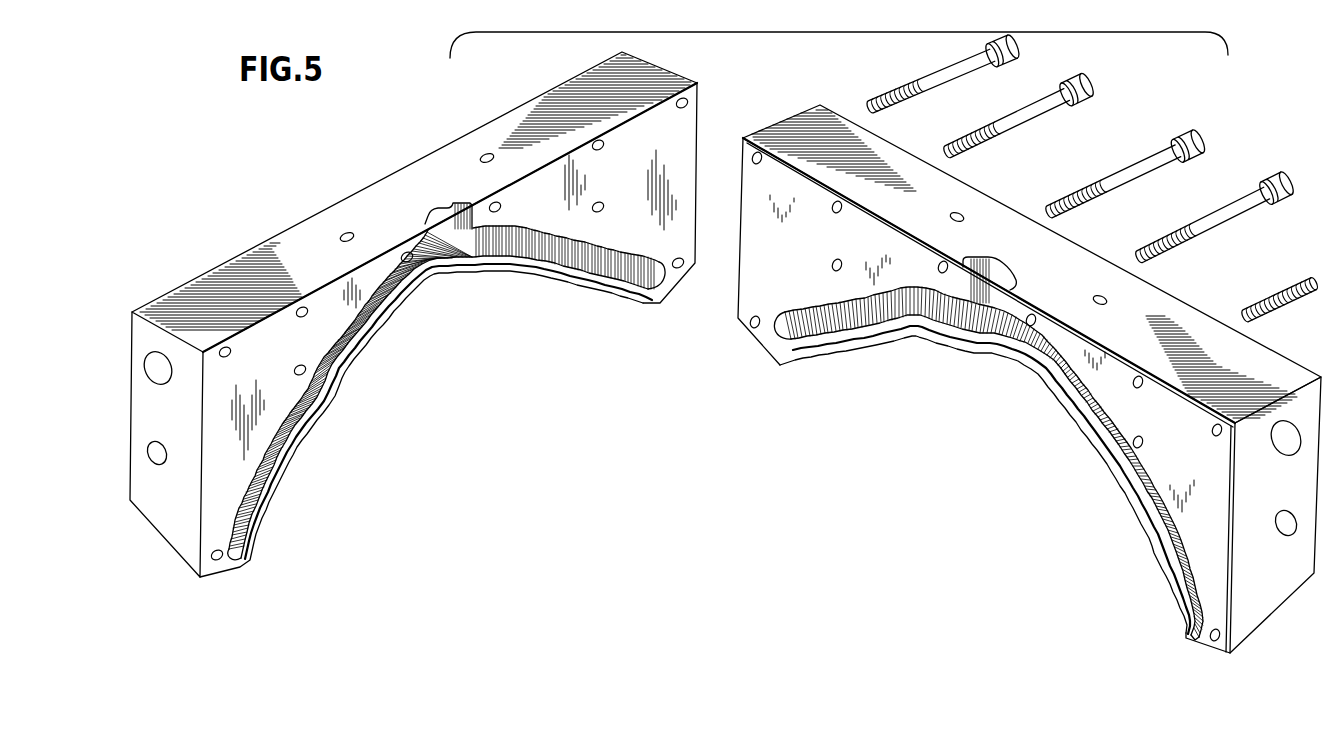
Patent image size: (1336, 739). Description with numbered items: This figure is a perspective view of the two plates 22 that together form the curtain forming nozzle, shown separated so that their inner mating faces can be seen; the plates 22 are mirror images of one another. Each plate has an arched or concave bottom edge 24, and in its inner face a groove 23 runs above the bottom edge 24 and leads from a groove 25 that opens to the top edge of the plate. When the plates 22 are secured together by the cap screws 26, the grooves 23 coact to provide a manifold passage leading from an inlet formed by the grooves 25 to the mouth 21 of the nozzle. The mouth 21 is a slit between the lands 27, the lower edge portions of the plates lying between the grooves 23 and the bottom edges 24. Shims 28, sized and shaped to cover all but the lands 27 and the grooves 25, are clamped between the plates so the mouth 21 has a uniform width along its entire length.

The mouth 21 is at (999, 348).
The plates 22 is at (310, 348).
The grooves 23 is at (563, 263).
The bottom edges 24 is at (522, 276).
The groove 25 is at (443, 212).
The cap screws 26 is at (1182, 130).
The lands 27 is at (312, 432).
The shims 28 is at (778, 270).